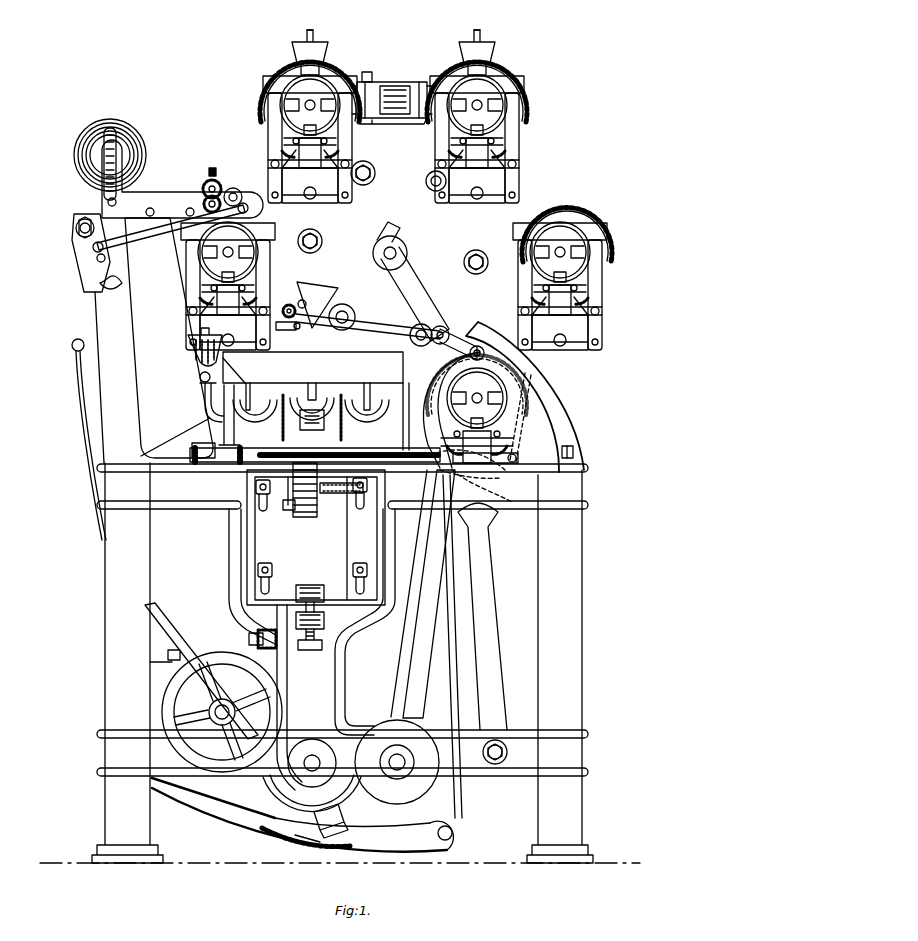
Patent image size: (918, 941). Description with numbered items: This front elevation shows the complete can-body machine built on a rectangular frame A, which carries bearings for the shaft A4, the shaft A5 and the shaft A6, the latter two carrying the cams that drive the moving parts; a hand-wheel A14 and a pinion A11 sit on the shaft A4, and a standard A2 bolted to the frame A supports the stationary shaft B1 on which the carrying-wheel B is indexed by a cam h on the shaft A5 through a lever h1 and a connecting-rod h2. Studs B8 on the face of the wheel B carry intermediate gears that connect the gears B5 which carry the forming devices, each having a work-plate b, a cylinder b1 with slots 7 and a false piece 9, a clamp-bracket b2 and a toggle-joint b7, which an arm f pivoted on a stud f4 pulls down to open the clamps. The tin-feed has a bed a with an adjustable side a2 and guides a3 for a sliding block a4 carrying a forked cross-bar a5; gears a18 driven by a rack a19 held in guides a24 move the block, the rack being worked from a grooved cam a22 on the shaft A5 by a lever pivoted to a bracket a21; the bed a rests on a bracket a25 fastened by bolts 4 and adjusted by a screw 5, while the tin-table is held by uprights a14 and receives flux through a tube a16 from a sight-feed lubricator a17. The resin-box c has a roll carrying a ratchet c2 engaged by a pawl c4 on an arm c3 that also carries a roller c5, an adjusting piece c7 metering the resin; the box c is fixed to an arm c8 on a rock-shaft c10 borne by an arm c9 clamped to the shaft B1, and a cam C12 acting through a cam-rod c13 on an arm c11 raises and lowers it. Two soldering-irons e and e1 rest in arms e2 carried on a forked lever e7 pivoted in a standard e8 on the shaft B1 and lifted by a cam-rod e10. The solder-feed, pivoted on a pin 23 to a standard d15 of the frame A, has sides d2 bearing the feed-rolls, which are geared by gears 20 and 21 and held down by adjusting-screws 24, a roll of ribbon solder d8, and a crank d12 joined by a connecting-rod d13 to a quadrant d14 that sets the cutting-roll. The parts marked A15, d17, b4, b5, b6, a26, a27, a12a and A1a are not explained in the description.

The rectangular frame A is at (342, 663).
The standard A2 is at (525, 397).
The shaft A5 is at (312, 772).
The standard d15 is at (99, 439).
The frame upright A15 is at (86, 440).
The roll of sheet or ribbon solder d8 is at (75, 157).
The sides d2 is at (182, 179).
The gear 20 is at (205, 184).
The gear 21 is at (204, 200).
The adjusting-screws 24 is at (216, 172).
The arm or crank d12 is at (242, 200).
The connecting-rod d13 is at (155, 240).
The pin 23 is at (75, 230).
The quadrant d14 is at (100, 285).
The slanted panel d17 is at (175, 302).
The soldering-iron e is at (317, 116).
The arms e2 is at (396, 19).
The soldering-iron e1 is at (476, 116).
The forked lever e7 is at (392, 90).
The cam-rod e10 is at (369, 360).
The standard e8 is at (392, 114).
The wheel or flange B is at (394, 135).
The studs B8 is at (470, 262).
The stationary shaft B1 is at (390, 246).
The arm c9 is at (415, 294).
The arm c11 is at (452, 343).
The rock-shaft c10 is at (450, 331).
The arm c8 is at (380, 322).
The box or hopper c is at (317, 305).
The ratchet c2 is at (300, 300).
The pawl c4 is at (286, 306).
The arm c3 is at (283, 324).
The roller c5 is at (301, 334).
The adjusting piece c7 is at (336, 328).
The sight-feed lubricator a17 is at (188, 352).
The work-plate b is at (520, 238).
The cylinder b1 is at (565, 238).
The slots 7 is at (528, 258).
The gears B5 is at (606, 248).
The clamp-bracket b2 is at (540, 295).
The frame bar b4 is at (520, 324).
The screw b6 is at (598, 320).
The plate b5 is at (558, 322).
The toggle-joint b7 is at (575, 348).
The false piece 9 is at (445, 380).
The arm f is at (486, 639).
The cam-rod c13 is at (414, 654).
The connecting-rod h2 is at (436, 689).
The rack a19 is at (313, 367).
The plate member a12a is at (322, 383).
The uprights a14 is at (230, 385).
The tube a16 is at (205, 412).
The cross-bar a5 is at (270, 425).
The sliding block a4 is at (285, 440).
The guides a3 is at (350, 437).
The bed a is at (215, 458).
The adjustable side a2 is at (405, 482).
The gears a18 is at (318, 504).
The guides a24 is at (295, 510).
The bracket a25 is at (343, 510).
The plate a26 is at (290, 560).
The bolts 4 is at (311, 536).
The tube frame a27 is at (270, 649).
The arm or bracket a21 is at (255, 630).
The screw 5 is at (312, 648).
The hand-wheel A14 is at (222, 710).
The pinion A11 is at (225, 700).
The shaft A4 is at (250, 728).
The grooved cam a22 is at (312, 763).
The shaft A6 is at (390, 762).
The cam C12 is at (397, 762).
The cam h is at (280, 806).
The lever h1 is at (374, 835).
The rack teeth A1a is at (270, 832).
The stud f4 is at (510, 752).